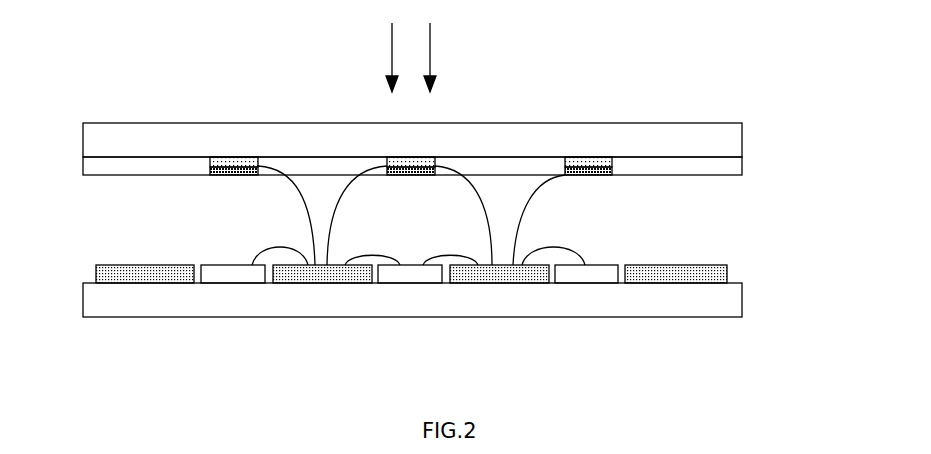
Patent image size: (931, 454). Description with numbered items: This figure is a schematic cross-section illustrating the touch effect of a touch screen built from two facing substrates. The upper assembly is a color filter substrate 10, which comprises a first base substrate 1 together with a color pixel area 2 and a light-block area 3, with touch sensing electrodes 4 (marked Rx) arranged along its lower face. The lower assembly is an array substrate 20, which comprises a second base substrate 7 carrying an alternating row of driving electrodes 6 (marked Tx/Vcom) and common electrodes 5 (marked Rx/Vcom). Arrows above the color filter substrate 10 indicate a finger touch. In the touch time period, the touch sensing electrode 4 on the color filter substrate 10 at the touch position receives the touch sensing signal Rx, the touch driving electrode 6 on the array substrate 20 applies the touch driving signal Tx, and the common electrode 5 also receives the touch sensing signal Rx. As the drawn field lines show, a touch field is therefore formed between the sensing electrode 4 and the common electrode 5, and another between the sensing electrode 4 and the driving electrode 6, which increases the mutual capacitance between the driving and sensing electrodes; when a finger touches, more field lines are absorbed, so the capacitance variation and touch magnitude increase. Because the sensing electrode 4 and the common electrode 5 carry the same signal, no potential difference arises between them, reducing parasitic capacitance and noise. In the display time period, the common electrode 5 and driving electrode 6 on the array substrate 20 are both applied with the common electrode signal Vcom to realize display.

The first base substrate 1 is at (216, 140).
The color pixel area 2 is at (495, 167).
The light-block area 3 is at (605, 175).
The sensing electrode 4 is at (575, 175).
The common electrode 5 is at (229, 280).
The driving electrode 6 is at (142, 277).
The second base substrate 7 is at (402, 303).
The color filter substrate 10 is at (442, 162).
The array substrate 20 is at (442, 293).